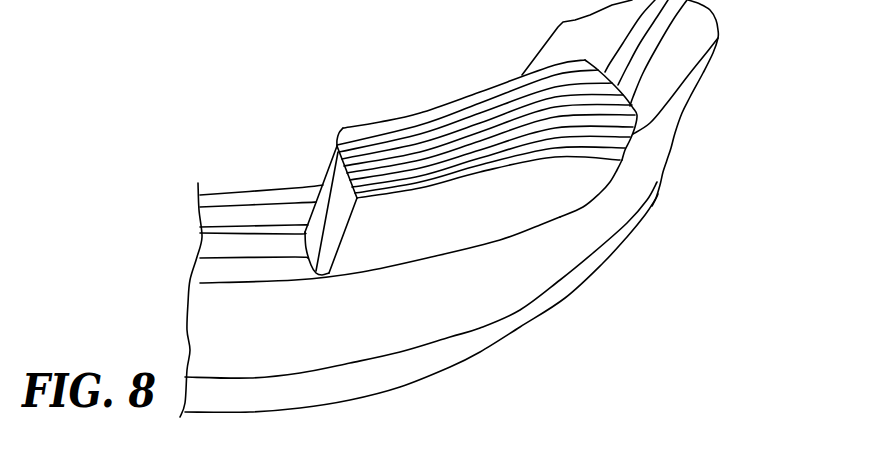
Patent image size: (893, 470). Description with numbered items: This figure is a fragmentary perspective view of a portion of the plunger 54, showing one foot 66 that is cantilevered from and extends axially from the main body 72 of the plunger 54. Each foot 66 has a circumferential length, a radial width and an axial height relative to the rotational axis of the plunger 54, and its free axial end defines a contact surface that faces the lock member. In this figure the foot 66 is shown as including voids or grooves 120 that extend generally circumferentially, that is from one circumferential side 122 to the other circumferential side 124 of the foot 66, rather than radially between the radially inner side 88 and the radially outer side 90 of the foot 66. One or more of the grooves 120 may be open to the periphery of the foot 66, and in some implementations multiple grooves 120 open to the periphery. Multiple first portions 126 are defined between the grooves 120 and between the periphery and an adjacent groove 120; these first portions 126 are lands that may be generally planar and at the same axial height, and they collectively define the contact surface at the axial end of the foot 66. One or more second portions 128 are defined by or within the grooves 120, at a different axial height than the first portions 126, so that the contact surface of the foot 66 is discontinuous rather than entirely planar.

The plunger 54 is at (694, 163).
The foot 66 is at (626, 164).
The main body 72 is at (572, 305).
The radially inner side 88 is at (391, 121).
The radially outer side 90 is at (398, 202).
The grooves 120 is at (480, 148).
The circumferential side 122 is at (323, 227).
The other circumferential side 124 is at (601, 68).
The first portions 126 is at (465, 156).
The second portions 128 is at (491, 181).